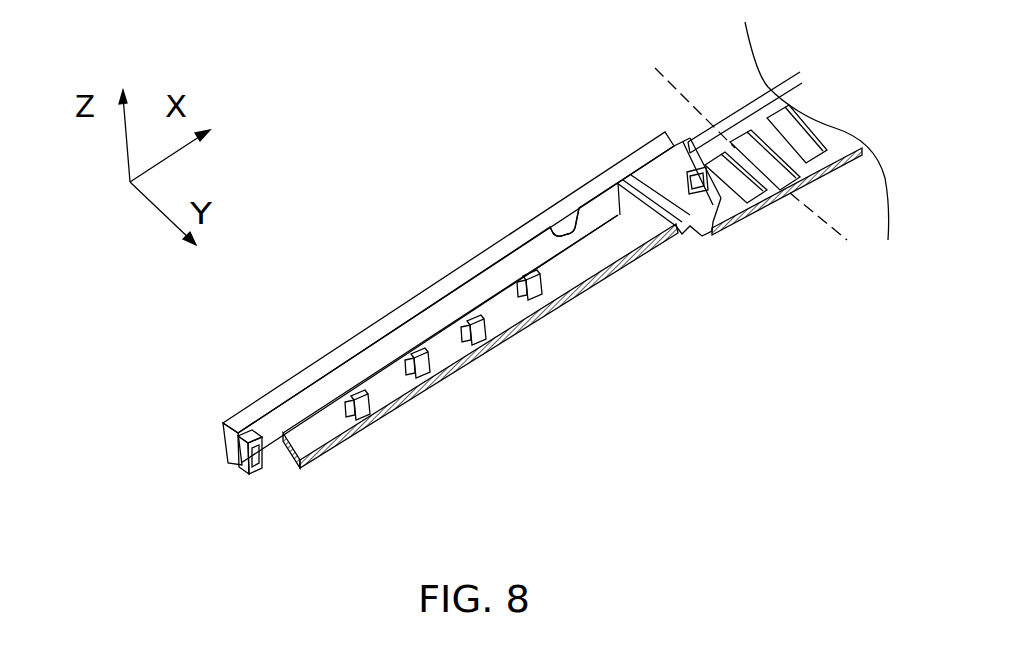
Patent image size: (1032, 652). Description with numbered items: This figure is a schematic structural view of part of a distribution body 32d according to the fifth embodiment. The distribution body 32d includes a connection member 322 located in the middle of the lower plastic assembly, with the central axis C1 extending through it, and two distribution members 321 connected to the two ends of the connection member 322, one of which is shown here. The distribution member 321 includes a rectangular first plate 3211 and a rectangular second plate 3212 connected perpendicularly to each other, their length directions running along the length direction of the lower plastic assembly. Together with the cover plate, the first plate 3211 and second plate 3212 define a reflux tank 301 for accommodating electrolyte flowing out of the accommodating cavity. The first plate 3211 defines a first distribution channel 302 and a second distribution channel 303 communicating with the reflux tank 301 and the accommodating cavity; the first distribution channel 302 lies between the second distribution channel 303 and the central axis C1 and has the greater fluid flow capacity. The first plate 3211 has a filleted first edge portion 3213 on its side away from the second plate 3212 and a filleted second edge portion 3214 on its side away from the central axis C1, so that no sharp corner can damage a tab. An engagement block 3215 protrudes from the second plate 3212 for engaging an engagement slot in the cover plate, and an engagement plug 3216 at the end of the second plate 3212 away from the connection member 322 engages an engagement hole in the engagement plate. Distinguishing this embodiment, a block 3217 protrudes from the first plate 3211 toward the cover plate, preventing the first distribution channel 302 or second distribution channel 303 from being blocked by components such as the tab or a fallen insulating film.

The distribution body 32d is at (458, 67).
The distribution member 321 is at (622, 447).
The connection member 322 is at (747, 110).
The reflux tank 301 is at (276, 488).
The first plate 3211 is at (400, 388).
The second plate 3212 is at (271, 412).
The first edge portion 3213 is at (342, 444).
The second edge portion 3214 is at (300, 464).
The engagement block 3215 is at (578, 214).
The engagement plug 3216 is at (238, 455).
The block 3217 is at (497, 337).
The first distribution channel 302 is at (514, 278).
The second distribution channel 303 is at (402, 357).
The central axis C1 is at (658, 88).